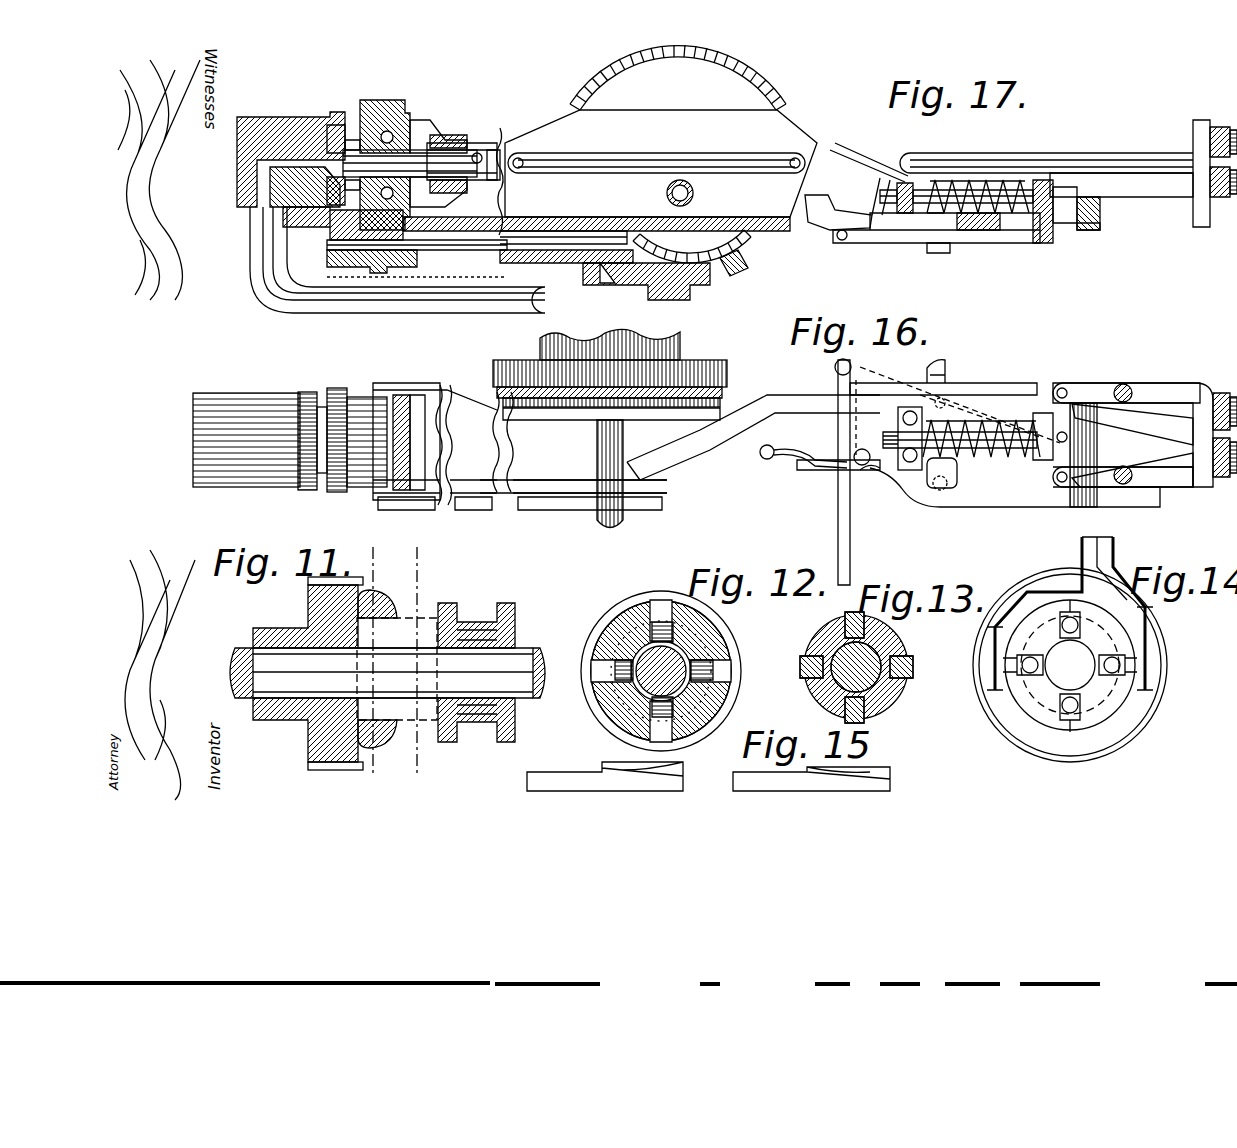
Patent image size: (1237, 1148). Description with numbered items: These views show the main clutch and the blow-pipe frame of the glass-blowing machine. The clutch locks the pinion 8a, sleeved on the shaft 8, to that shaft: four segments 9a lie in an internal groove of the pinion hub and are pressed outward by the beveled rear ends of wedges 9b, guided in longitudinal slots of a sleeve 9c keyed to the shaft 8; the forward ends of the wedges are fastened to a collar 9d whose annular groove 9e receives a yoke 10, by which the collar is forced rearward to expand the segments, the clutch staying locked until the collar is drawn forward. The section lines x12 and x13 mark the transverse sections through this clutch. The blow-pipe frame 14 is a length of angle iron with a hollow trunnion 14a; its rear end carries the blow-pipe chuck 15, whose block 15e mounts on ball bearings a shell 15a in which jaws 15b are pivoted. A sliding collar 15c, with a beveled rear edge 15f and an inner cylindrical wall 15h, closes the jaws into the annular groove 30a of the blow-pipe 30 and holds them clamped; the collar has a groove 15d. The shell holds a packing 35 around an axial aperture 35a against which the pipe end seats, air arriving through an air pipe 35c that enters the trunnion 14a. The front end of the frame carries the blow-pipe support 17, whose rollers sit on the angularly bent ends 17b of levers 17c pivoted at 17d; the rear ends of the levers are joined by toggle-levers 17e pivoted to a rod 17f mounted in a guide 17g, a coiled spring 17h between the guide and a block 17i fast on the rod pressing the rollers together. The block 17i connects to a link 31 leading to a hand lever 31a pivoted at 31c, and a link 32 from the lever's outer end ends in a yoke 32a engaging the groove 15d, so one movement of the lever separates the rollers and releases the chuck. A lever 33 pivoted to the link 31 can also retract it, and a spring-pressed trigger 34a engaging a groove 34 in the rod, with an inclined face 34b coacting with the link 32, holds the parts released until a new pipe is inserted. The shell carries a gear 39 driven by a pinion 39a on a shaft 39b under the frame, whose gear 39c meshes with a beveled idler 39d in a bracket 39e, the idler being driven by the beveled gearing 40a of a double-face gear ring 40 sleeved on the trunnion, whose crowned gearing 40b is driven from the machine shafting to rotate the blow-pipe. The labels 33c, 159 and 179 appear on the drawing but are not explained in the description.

In FIG. 11, the shaft 8 is at (256, 660).
In FIG. 11, the pinion 8a is at (305, 712).
In FIG. 11, the segments 9a is at (342, 752).
In FIG. 12, the segments 9a is at (648, 630).
In FIG. 11, the wedges 9b is at (418, 630).
In FIG. 12, the wedges 9b is at (612, 656).
In FIG. 13, the wedges 9b is at (880, 690).
In FIG. 15, the wedges 9b is at (750, 773).
In FIG. 11, the sleeve 9c is at (440, 728).
In FIG. 13, the sleeve 9c is at (892, 662).
In FIG. 12, the collar 9d is at (583, 612).
In FIG. 14, the collar 9d is at (1022, 695).
In FIG. 11, the annular groove 9e is at (481, 601).
In FIG. 14, the yoke 10 is at (1032, 596).
In FIG. 17, the blow-pipe frame 14 is at (760, 148).
In FIG. 16, the blow-pipe frame 14 is at (460, 440).
In FIG. 16, the hollow trunnion 14a is at (665, 342).
In FIG. 17, the blow-pipe chuck 15 is at (415, 125).
In FIG. 16, the blow-pipe chuck 15 is at (362, 400).
In FIG. 17, the shell 15a is at (333, 135).
In FIG. 17, the jaws 15b is at (440, 130).
In FIG. 17, the sliding collar 15c is at (252, 145).
In FIG. 16, the sliding collar 15c is at (438, 456).
In FIG. 17, the groove 15d is at (492, 140).
In FIG. 16, the groove 15d is at (402, 420).
In FIG. 16, the block 15e is at (240, 412).
In FIG. 17, the beveled edge 15f is at (445, 118).
In FIG. 17, the inner cylindrical wall 15h is at (495, 150).
In FIG. 17, the blow-pipe support 17 is at (1202, 118).
In FIG. 16, the blow-pipe support 17 is at (1193, 378).
In FIG. 16, the angularly bent ends 17b is at (1190, 455).
In FIG. 17, the levers 17c is at (1112, 172).
In FIG. 16, the levers 17c is at (1145, 385).
In FIG. 16, the pivot 17d is at (1118, 390).
In FIG. 16, the toggle-levers 17e is at (1065, 440).
In FIG. 17, the rod 17f is at (1013, 212).
In FIG. 16, the rod 17f is at (967, 447).
In FIG. 16, the guide 17g is at (912, 440).
In FIG. 16, the coiled spring 17h is at (960, 460).
In FIG. 17, the block 17i is at (1082, 222).
In FIG. 16, the block 17i is at (1045, 405).
In FIG. 17, the blow-pipe 30 is at (625, 152).
In FIG. 17, the annular groove 30a is at (448, 135).
In FIG. 17, the link 31 is at (996, 245).
In FIG. 16, the link 31 is at (900, 382).
In FIG. 17, the hand lever 31a is at (812, 240).
In FIG. 16, the hand lever 31a is at (900, 385).
In FIG. 16, the pivot 31c is at (822, 440).
In FIG. 17, the link 32 is at (866, 185).
In FIG. 16, the link 32 is at (546, 490).
In FIG. 16, the yoke 32a is at (400, 482).
In FIG. 17, the lever 33 is at (940, 253).
In FIG. 16, the lever 33 is at (945, 365).
In FIG. 17, the bearing ring 33c is at (695, 192).
In FIG. 16, the groove 34 is at (880, 440).
In FIG. 17, the spring pressed trigger 34a is at (885, 200).
In FIG. 16, the spring pressed trigger 34a is at (818, 458).
In FIG. 16, the inclined face 34b is at (808, 472).
In FIG. 17, the packing 35 is at (347, 190).
In FIG. 17, the axial aperture 35a is at (350, 142).
In FIG. 17, the air pipe 35c is at (345, 242).
In FIG. 16, the air pipe 35c is at (600, 522).
In FIG. 17, the gear 39 is at (380, 130).
In FIG. 17, the pinion 39a is at (378, 275).
In FIG. 17, the shaft 39b is at (283, 305).
In FIG. 17, the gear 39c is at (612, 222).
In FIG. 17, the beveled idler 39d is at (730, 270).
In FIG. 17, the bracket 39e is at (645, 285).
In FIG. 17, the double-face gear ring 40 is at (609, 70).
In FIG. 17, the beveled gearing 40a is at (760, 105).
In FIG. 16, the beveled gearing 40a is at (503, 370).
In FIG. 17, the crowned gearing 40b is at (742, 74).
In FIG. 16, the crowned gearing 40b is at (712, 365).
In FIG. 17, the plate 159 is at (500, 190).
In FIG. 17, the rod end 179 is at (905, 178).
In FIG. 11, the section line x12 is at (370, 662).
In FIG. 11, the section line x13 is at (415, 672).